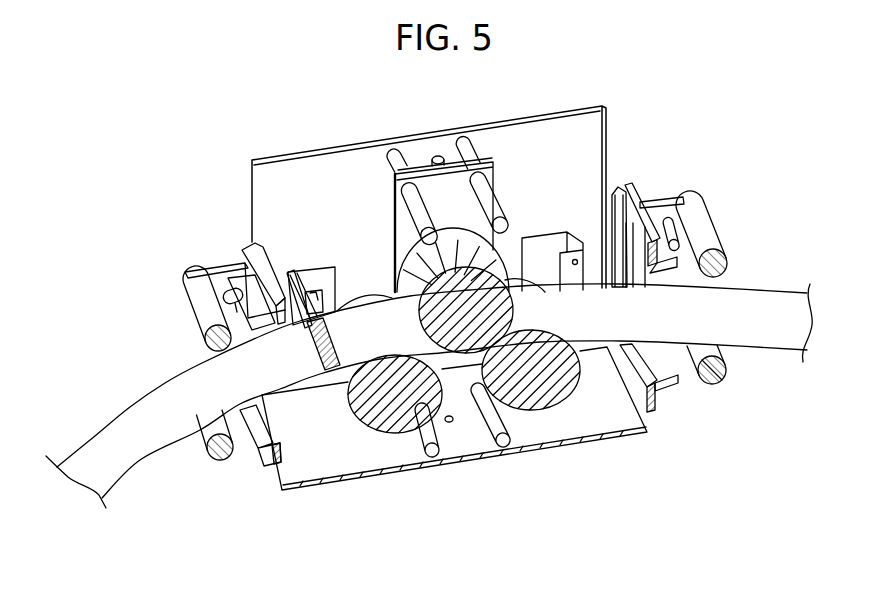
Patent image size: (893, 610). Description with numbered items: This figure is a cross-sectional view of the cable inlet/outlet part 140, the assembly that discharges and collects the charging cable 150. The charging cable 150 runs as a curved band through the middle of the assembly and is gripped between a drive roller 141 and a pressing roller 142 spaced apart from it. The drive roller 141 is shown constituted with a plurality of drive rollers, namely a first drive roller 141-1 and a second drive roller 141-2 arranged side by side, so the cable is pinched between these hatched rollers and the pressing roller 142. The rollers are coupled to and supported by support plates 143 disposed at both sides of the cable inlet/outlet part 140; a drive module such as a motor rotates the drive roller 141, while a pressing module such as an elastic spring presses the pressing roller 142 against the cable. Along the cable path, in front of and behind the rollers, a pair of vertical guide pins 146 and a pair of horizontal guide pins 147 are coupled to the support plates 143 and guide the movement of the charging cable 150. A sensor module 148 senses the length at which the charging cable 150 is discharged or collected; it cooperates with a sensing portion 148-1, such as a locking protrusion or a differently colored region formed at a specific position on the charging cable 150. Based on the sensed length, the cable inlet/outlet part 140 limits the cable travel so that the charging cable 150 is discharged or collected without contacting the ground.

The cable inlet/outlet part 140 is at (139, 106).
The drive roller 141 is at (582, 528).
The first drive roller 141-1 is at (497, 413).
The second drive roller 141-2 is at (436, 426).
The pressing roller 142 is at (494, 288).
The support plate 143 is at (450, 180).
The vertical guide pin 146 is at (233, 283).
The horizontal guide pin 147 is at (203, 311).
The sensor module 148 is at (316, 300).
The sensing portion 148-1 is at (330, 378).
The charging cable 150 is at (758, 331).